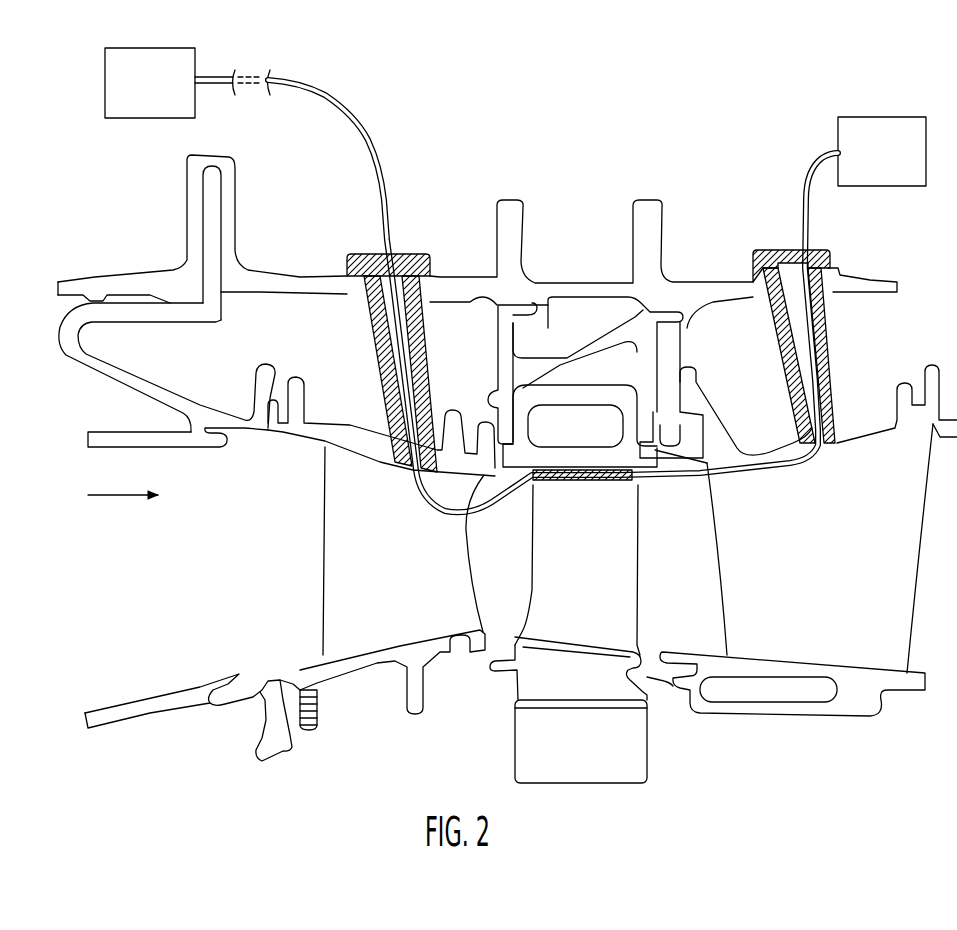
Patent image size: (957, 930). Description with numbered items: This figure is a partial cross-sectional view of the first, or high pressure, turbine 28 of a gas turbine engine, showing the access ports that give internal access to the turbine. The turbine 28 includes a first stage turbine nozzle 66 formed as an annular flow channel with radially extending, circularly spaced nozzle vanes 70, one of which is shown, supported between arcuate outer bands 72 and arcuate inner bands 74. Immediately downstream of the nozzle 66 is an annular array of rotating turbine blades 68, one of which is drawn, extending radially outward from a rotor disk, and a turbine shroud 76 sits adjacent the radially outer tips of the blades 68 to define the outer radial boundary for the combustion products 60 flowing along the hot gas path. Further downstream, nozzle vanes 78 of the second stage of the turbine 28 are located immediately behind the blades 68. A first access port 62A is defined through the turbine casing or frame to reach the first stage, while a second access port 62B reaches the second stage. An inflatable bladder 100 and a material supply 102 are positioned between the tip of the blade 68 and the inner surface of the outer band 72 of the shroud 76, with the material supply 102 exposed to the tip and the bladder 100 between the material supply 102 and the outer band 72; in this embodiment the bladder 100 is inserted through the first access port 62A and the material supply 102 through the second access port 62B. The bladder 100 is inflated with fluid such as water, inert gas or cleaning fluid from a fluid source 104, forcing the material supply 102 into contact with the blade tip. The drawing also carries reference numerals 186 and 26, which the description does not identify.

The fluid source 104 is at (138, 48).
The conduit 186 is at (322, 97).
The first turbine 28 is at (450, 135).
The first access port 62A is at (378, 250).
The second access port 62B is at (792, 246).
The arcuate outer band 72 is at (347, 433).
The turbine shroud 76 is at (603, 398).
The inflatable bladder 100 is at (598, 470).
The material supply 102 is at (650, 482).
The combustion products 60 is at (116, 497).
The first stage turbine nozzle 66 is at (316, 576).
The nozzle vane 70 is at (399, 579).
The turbine blade 68 is at (588, 574).
The second stage nozzle vane 78 is at (811, 553).
The shaft/rotor hub 26 is at (115, 710).
The arcuate inner band 74 is at (345, 667).